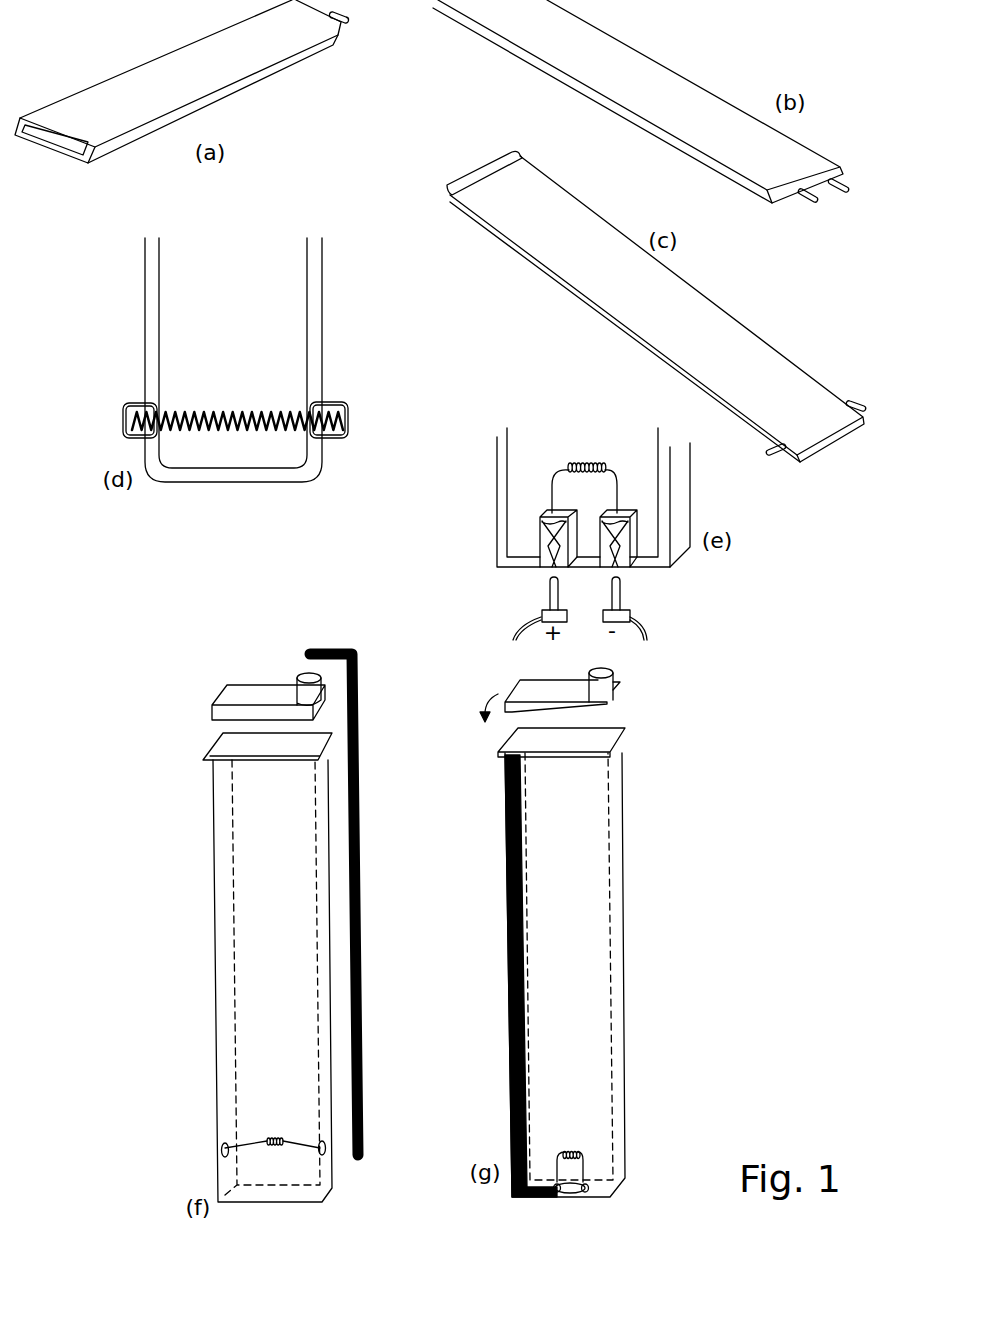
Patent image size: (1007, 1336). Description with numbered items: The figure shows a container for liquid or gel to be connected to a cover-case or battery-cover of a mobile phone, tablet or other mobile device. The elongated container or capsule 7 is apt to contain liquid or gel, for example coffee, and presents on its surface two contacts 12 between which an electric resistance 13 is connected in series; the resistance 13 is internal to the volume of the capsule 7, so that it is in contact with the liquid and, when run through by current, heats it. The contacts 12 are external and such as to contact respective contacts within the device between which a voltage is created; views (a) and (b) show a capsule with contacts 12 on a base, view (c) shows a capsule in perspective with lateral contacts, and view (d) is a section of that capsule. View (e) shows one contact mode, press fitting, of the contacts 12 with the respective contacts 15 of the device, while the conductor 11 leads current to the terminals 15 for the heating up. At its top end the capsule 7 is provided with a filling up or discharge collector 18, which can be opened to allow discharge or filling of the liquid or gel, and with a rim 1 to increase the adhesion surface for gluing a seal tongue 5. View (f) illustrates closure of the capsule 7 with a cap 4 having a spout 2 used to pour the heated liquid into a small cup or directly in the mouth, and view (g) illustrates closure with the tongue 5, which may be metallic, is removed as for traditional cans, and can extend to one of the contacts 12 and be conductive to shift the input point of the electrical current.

The rim 1 is at (245, 755).
The spout 2 is at (302, 677).
The cap 4 is at (268, 687).
The seal tongue 5 is at (358, 680).
The capsule 7 is at (252, 72).
The conductor 11 is at (522, 622).
The contacts 12 is at (845, 192).
The electric resistance 13 is at (225, 412).
The contacts 15 is at (608, 577).
The filling up or discharge collector 18 is at (83, 165).